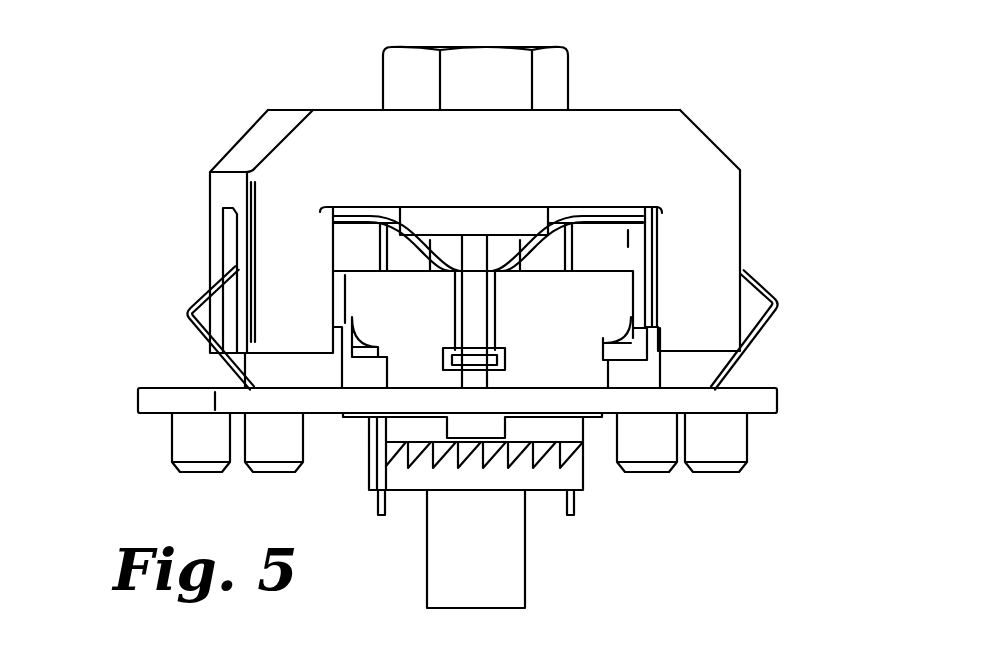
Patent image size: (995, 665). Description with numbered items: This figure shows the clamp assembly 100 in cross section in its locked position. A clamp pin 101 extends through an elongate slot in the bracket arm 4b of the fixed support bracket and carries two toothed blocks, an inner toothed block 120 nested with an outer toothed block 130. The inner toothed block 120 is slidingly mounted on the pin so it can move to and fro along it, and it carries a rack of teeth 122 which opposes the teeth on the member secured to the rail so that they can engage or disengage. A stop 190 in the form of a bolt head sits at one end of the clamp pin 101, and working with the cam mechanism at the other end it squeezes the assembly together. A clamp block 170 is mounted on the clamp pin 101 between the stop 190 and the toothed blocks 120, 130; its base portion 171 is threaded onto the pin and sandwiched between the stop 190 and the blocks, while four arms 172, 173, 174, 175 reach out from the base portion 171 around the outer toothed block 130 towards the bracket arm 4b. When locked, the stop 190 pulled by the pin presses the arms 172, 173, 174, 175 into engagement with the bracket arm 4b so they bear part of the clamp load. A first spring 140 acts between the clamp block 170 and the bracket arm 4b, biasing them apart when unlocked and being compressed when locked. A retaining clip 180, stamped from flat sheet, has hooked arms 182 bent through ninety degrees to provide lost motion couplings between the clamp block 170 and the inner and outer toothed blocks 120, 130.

The clamp assembly 100 is at (754, 149).
The clamp pin 101 is at (425, 565).
The inner toothed block 120 is at (583, 470).
The rack of teeth 122 is at (517, 462).
The outer toothed block 130 is at (401, 333).
The first spring 140 is at (767, 292).
The clamp block 170 is at (252, 90).
The base portion 171 is at (335, 108).
The arm 172 is at (237, 218).
The arm 173 is at (210, 218).
The arm 174 is at (742, 218).
The arm 175 is at (597, 217).
The retaining clip 180 is at (520, 210).
The arm of retaining clip 182 is at (473, 312).
The stop 190 is at (513, 45).
The bracket arm 4b is at (152, 388).